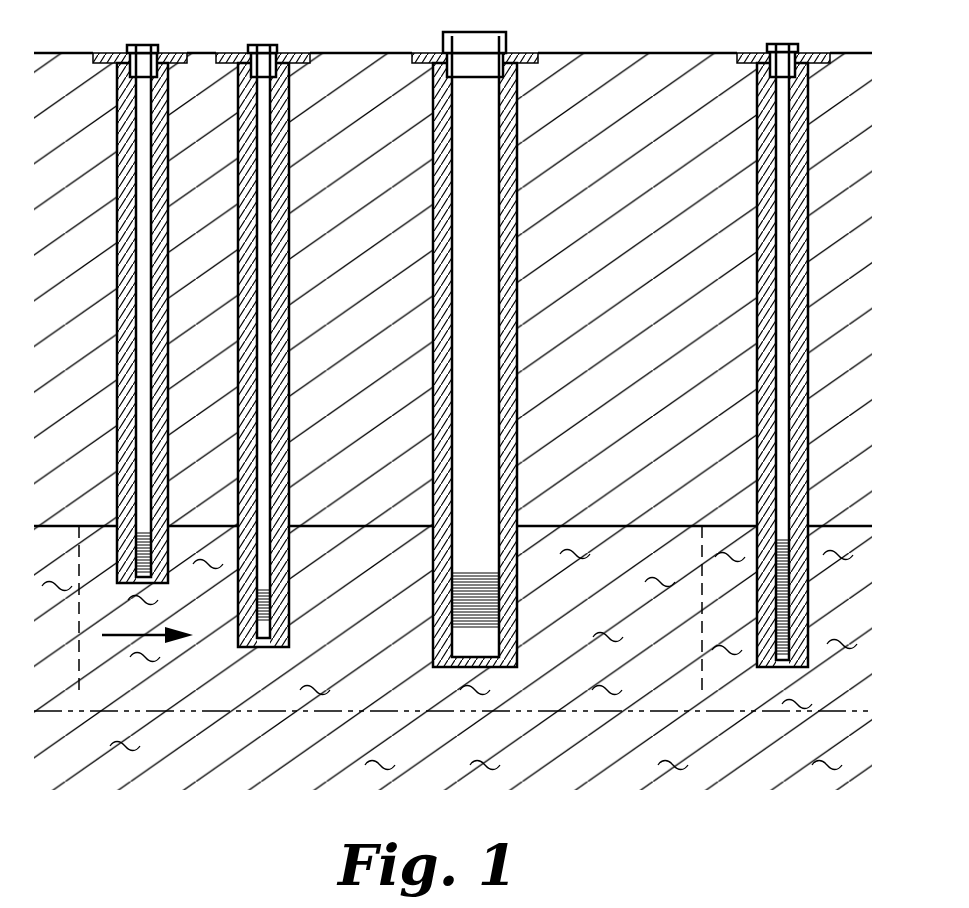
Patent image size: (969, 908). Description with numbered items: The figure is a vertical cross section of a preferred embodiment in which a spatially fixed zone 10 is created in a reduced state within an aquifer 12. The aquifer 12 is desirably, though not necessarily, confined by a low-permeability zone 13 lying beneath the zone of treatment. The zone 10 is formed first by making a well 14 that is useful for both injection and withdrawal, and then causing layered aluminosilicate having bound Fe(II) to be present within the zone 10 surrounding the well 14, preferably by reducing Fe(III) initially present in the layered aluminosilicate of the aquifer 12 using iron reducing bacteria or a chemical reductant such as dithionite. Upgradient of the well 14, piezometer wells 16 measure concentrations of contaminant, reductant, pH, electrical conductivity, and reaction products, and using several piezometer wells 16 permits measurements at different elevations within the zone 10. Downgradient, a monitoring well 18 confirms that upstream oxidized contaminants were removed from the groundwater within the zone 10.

The spatially fixed zone 10 is at (708, 673).
The aquifer 12 is at (833, 502).
The low-permeability zone 13 is at (212, 763).
The well 14 is at (523, 418).
The piezometer wells 16 is at (178, 377).
The monitoring well 18 is at (820, 323).